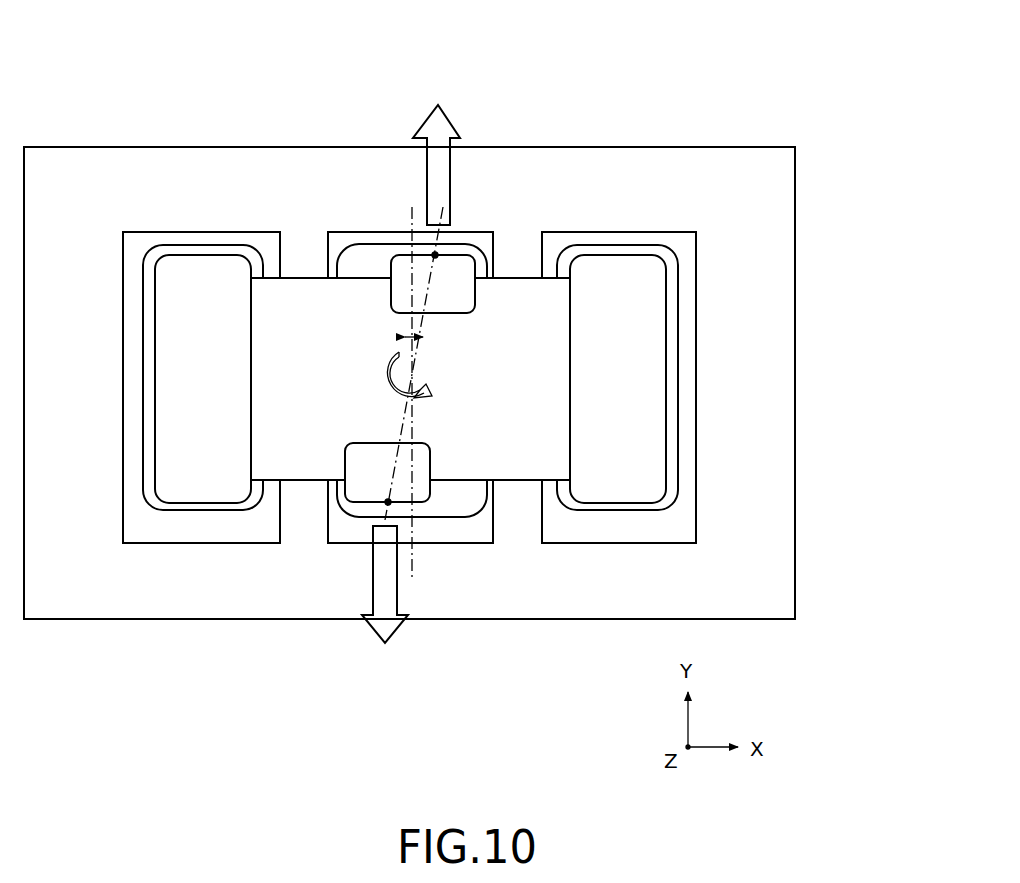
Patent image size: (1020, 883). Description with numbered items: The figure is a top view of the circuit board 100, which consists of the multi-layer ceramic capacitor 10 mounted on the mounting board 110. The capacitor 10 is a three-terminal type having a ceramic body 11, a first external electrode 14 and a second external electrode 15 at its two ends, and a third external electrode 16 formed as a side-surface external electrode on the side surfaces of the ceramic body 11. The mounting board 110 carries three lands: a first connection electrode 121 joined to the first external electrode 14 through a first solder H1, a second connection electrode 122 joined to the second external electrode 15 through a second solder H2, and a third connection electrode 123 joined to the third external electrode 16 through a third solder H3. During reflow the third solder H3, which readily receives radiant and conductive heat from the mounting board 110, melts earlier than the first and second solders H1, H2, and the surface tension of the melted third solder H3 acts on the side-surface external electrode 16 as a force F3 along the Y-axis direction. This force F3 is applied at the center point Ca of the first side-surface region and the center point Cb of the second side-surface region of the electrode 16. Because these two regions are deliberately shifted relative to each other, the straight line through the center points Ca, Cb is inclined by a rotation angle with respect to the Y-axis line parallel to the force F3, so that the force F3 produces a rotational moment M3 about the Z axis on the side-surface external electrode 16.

The circuit board 100 is at (808, 178).
The mounting board 110 is at (787, 452).
The first connection electrode (land) 121 is at (203, 232).
The second connection electrode (land) 122 is at (618, 232).
The third connection electrode (land) 123 is at (350, 232).
The multi-layer ceramic capacitor 10 is at (407, 384).
The ceramic body 11 is at (316, 274).
The first external electrode 14 is at (155, 300).
The second external electrode 15 is at (666, 310).
The third external electrode (side-surface external electrode) 16 is at (463, 258).
The first solder H1 is at (188, 512).
The second solder H2 is at (625, 510).
The third solder H3 is at (469, 507).
The center point of first side-surface region Ca is at (435, 258).
The center point of second side-surface region Cb is at (388, 502).
The force F3 is at (429, 110).
The rotational moment M3 is at (429, 381).